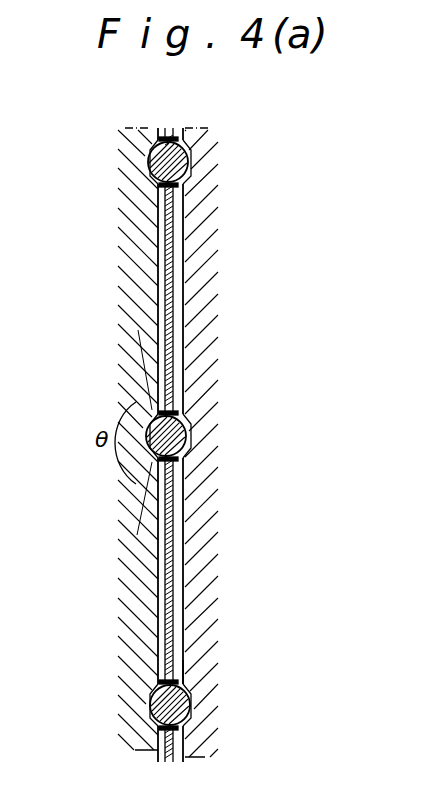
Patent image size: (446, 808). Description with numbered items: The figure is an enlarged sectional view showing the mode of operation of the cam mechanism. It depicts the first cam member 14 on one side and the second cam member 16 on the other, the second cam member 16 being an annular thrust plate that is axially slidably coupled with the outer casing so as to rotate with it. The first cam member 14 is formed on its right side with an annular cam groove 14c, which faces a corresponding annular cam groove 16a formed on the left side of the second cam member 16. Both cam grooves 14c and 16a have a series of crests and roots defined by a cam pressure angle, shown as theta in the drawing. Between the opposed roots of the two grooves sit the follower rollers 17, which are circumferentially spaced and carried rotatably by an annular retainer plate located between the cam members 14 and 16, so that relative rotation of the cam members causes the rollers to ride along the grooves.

The first cam member 14 is at (130, 252).
The annular cam groove 14c is at (160, 681).
The second cam member 16 is at (210, 317).
The annular cam groove 16a is at (184, 682).
The follower rollers 17 is at (184, 166).